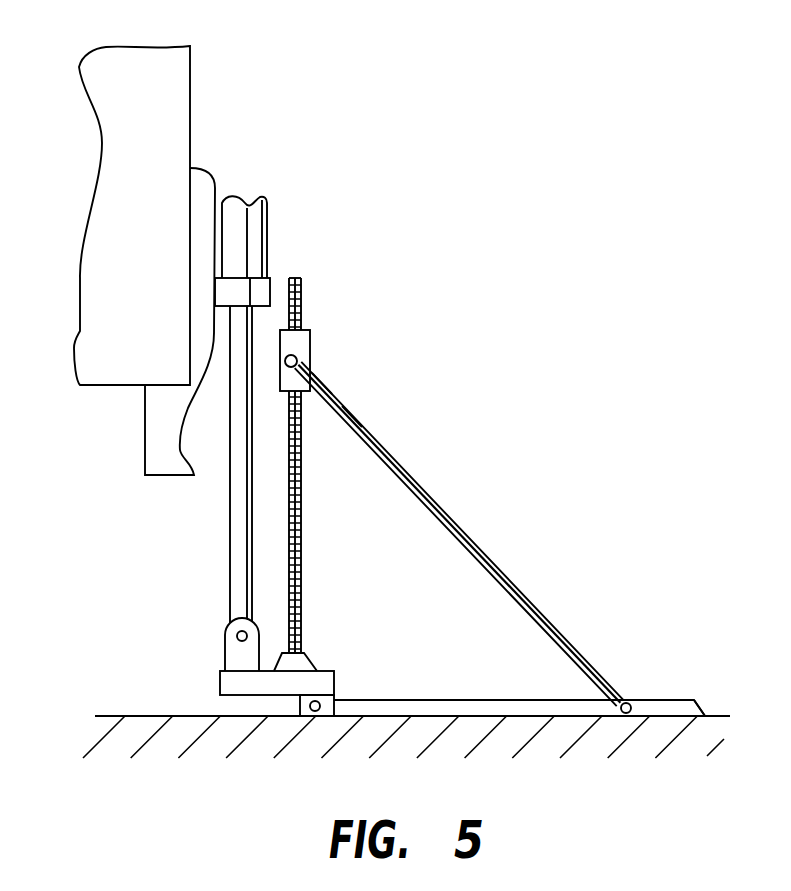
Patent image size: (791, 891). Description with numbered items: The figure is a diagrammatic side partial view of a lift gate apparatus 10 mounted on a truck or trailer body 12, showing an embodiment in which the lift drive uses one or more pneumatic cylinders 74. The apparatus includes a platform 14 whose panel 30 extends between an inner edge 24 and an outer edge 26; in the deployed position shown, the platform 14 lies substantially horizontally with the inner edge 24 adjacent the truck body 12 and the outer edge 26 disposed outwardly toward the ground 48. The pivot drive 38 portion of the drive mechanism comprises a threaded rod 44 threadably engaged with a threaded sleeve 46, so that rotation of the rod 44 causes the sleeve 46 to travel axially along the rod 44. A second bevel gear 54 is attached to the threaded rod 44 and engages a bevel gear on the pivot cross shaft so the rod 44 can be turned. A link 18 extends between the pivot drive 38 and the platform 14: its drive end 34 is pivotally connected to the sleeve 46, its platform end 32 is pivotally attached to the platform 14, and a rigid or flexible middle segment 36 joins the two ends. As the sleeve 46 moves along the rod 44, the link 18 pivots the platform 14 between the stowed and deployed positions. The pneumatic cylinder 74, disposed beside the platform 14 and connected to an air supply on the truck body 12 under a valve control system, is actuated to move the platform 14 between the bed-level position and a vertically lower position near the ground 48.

The lift gate apparatus 10 is at (558, 400).
The truck or trailer body 12 is at (188, 119).
The platform 14 is at (527, 693).
The link 18 is at (372, 427).
The inner edge 24 is at (332, 695).
The outer edge 26 is at (697, 711).
The panel 30 is at (660, 693).
The platform end 32 is at (627, 698).
The drive end 34 is at (296, 355).
The middle segment 36 is at (449, 508).
The pivot drive 38 is at (360, 380).
The threaded rod 44 is at (299, 540).
The threaded sleeve 46 is at (308, 325).
The ground 48 is at (185, 713).
The second bevel gear 54 is at (306, 655).
The pneumatic cylinder 74 is at (227, 570).